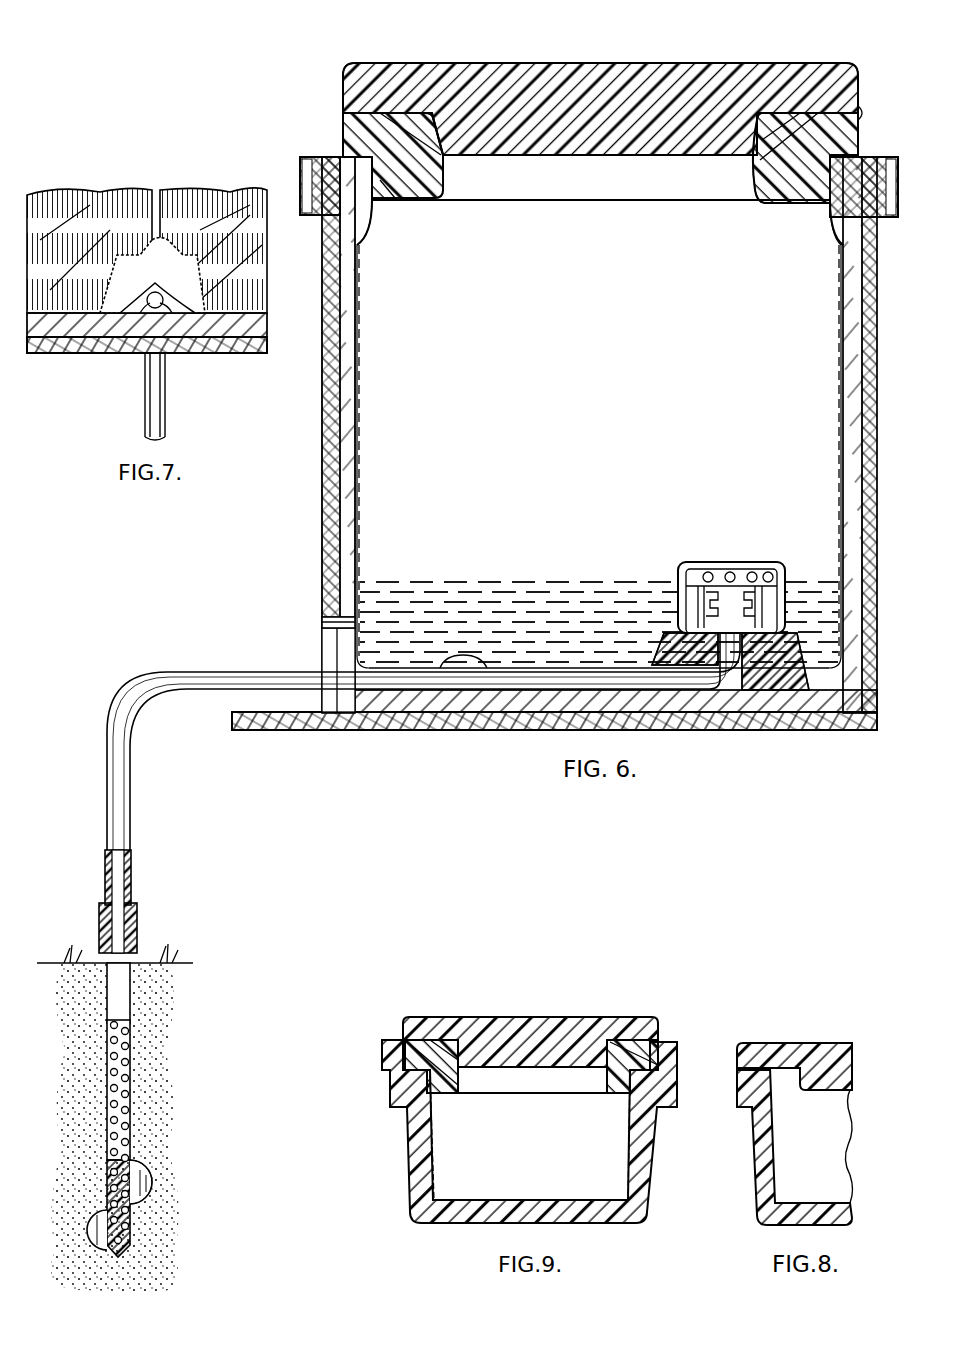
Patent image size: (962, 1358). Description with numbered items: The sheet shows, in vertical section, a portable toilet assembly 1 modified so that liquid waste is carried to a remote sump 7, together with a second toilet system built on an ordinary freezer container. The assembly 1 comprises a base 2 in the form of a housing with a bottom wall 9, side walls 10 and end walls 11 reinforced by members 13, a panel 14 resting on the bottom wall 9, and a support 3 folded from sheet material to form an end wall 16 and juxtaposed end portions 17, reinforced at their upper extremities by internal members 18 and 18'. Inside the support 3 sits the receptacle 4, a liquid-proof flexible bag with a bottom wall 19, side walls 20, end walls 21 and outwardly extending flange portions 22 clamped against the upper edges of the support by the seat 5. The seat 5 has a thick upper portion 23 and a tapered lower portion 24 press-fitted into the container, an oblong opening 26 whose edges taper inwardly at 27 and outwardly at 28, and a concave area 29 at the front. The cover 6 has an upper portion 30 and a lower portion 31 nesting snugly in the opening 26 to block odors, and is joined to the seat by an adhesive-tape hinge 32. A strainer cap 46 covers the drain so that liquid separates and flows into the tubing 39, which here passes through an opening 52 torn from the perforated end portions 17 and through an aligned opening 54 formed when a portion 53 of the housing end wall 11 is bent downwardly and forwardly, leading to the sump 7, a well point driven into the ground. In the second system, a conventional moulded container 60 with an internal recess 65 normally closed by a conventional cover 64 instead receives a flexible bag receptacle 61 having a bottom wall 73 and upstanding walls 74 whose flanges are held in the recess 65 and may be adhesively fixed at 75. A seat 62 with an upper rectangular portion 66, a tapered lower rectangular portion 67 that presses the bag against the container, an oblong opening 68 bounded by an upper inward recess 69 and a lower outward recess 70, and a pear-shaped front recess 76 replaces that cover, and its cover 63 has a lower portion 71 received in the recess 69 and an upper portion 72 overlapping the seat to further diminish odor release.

In FIG. 6, the assembly 1 is at (320, 44).
In FIG. 6, the base 2 is at (602, 422).
In FIG. 6, the support 3 is at (860, 330).
In FIG. 6, the receptacle 4 is at (815, 298).
In FIG. 7, the receptacle 4 is at (180, 182).
In FIG. 6, the seat 5 is at (336, 136).
In FIG. 6, the cover 6 is at (600, 80).
In FIG. 6, the sump 7 is at (378, 623).
In FIG. 6, the bottom wall 9 is at (554, 736).
In FIG. 7, the bottom wall 9 is at (147, 365).
In FIG. 6, the side walls 10 is at (356, 221).
In FIG. 6, the end walls 11 is at (331, 446).
In FIG. 6, the reinforcing members 13 is at (312, 178).
In FIG. 6, the panel 14 is at (680, 702).
In FIG. 7, the panel 14 is at (52, 328).
In FIG. 6, the end wall 16 is at (850, 390).
In FIG. 6, the end portions 17 is at (345, 500).
In FIG. 6, the reinforcing members 18 is at (376, 434).
In FIG. 6, the reinforcing members 18' is at (882, 393).
In FIG. 6, the bottom wall 19 is at (455, 660).
In FIG. 7, the bottom wall 19 is at (147, 325).
In FIG. 6, the side walls 20 is at (625, 297).
In FIG. 6, the end walls 21 is at (361, 428).
In FIG. 6, the flange portions 22 is at (600, 175).
In FIG. 6, the upper portion 23 is at (381, 173).
In FIG. 6, the lower portion 24 is at (392, 192).
In FIG. 6, the opening 26 is at (624, 150).
In FIG. 6, the tapered marginal edges 27 is at (748, 128).
In FIG. 6, the tapered marginal edges 28 is at (758, 182).
In FIG. 6, the concave area 29 is at (418, 128).
In FIG. 6, the upper portion 30 is at (452, 72).
In FIG. 6, the lower portion 31 is at (553, 153).
In FIG. 6, the hinge 32 is at (864, 110).
In FIG. 6, the tubing 39 is at (162, 684).
In FIG. 7, the tubing 39 is at (166, 414).
In FIG. 6, the cap 46 is at (770, 561).
In FIG. 6, the opening 52 is at (344, 644).
In FIG. 7, the opening 52 is at (188, 260).
In FIG. 6, the portion 53 is at (255, 730).
In FIG. 6, the opening 54 is at (330, 659).
In FIG. 9, the container 60 is at (525, 1131).
In FIG. 8, the container 60 is at (746, 1163).
In FIG. 9, the receptacle 61 is at (440, 1144).
In FIG. 9, the seat 62 is at (638, 1050).
In FIG. 9, the cover 63 is at (521, 1015).
In FIG. 8, the conventional cover 64 is at (810, 1042).
In FIG. 9, the internal recess 65 is at (640, 1067).
In FIG. 9, the upper rectangular portion 66 is at (417, 1045).
In FIG. 9, the lower rectangular portion 67 is at (400, 1084).
In FIG. 9, the opening 68 is at (498, 1083).
In FIG. 9, the upper marginal recess 69 is at (613, 1060).
In FIG. 9, the lower marginal recess 70 is at (458, 1078).
In FIG. 9, the lower portion 71 is at (533, 1068).
In FIG. 9, the upper portion 72 is at (422, 1025).
In FIG. 9, the bottom wall 73 is at (527, 1198).
In FIG. 9, the upstanding walls 74 is at (433, 1168).
In FIG. 9, the adhesive 75 is at (440, 1080).
In FIG. 9, the front recess 76 is at (448, 1050).